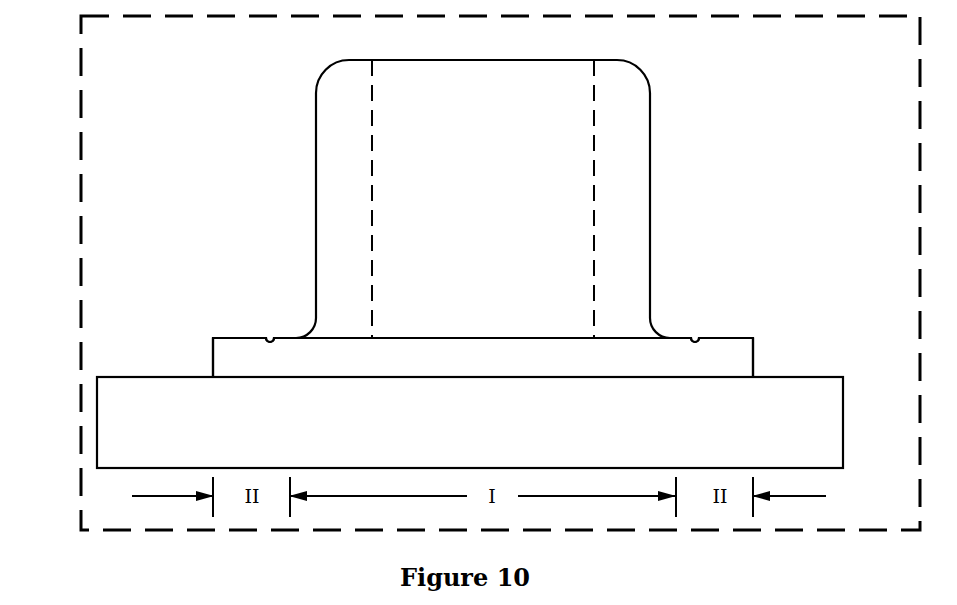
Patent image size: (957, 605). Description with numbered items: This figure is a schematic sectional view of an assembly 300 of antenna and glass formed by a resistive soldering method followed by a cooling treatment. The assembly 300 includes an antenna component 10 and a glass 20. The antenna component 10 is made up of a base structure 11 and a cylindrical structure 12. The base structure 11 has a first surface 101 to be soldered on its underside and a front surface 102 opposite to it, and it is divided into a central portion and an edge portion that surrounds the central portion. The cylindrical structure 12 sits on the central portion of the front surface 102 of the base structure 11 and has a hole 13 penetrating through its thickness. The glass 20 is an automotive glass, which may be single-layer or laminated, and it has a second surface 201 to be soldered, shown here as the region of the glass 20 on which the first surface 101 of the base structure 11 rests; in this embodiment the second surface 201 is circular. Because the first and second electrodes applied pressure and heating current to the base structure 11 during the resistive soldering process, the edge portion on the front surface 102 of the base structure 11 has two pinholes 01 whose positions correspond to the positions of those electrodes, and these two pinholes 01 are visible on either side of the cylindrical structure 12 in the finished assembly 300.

The assembly of antenna and glass 300 is at (80, 125).
The antenna component 10 is at (312, 126).
The hole 13 is at (580, 185).
The cylindrical structure 12 is at (618, 218).
The base structure 11 is at (275, 362).
The pinholes 01 is at (268, 336).
The front surface 102 is at (228, 336).
The first surface to be soldered 101 is at (717, 376).
The glass 20 is at (810, 430).
The second surface to be soldered 201 is at (810, 376).